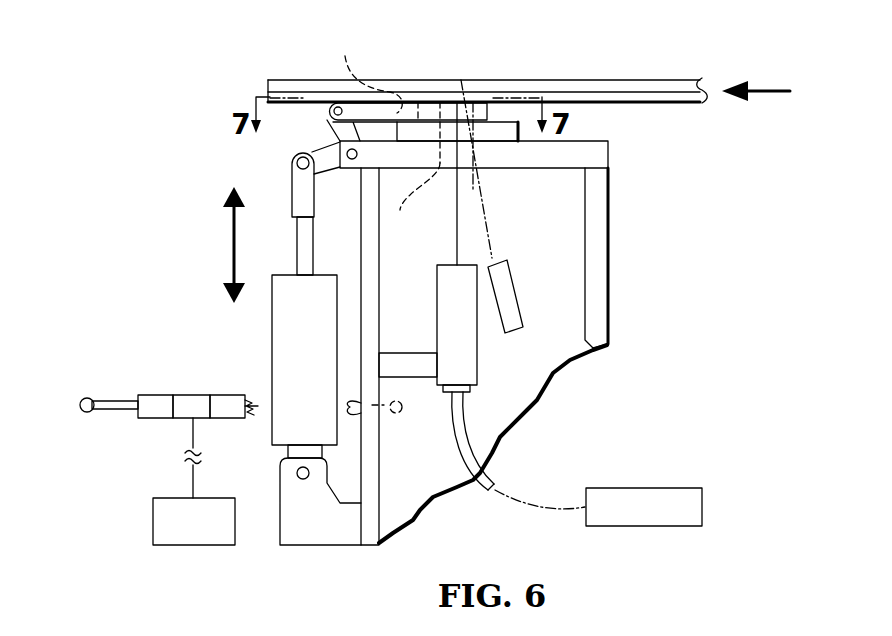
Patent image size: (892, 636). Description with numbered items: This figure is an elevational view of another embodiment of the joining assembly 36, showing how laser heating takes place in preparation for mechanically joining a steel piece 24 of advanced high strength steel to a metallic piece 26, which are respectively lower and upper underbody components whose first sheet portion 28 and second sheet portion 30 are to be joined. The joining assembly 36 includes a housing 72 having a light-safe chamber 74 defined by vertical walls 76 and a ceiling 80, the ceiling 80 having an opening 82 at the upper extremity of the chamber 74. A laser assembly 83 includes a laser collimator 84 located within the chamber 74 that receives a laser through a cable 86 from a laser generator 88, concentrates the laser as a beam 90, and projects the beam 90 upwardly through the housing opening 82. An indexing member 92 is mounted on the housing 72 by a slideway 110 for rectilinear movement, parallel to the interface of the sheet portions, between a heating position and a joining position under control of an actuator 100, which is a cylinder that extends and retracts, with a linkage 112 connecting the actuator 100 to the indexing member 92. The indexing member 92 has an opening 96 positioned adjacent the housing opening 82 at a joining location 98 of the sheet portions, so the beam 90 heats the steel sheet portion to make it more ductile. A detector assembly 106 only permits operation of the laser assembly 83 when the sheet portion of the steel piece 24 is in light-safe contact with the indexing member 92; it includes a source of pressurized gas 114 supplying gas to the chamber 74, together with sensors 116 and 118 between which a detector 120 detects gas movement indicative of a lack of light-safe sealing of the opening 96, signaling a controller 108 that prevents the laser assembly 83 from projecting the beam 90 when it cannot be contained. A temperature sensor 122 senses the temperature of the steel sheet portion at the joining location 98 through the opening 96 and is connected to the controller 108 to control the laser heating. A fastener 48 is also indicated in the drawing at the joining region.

The steel piece 24 is at (459, 96).
The metallic piece 26 is at (332, 80).
The first sheet portion 28 is at (628, 104).
The second sheet portion 30 is at (598, 81).
The joining assembly 36 is at (484, 305).
The fastener 48 is at (386, 98).
The housing 72 is at (505, 331).
The light-safe chamber 74 is at (588, 284).
The vertical walls 76 is at (607, 225).
The ceiling 80 is at (603, 155).
The opening 82 is at (413, 201).
The laser assembly 83 is at (433, 478).
The laser collimator 84 is at (477, 323).
The cable 86 is at (462, 433).
The laser generator 88 is at (631, 519).
The laser beam 90 is at (457, 231).
The indexing member 92 is at (431, 100).
The opening 96 is at (461, 80).
The joining location 98 is at (475, 100).
The actuator 100 is at (275, 352).
The detector assembly 106 is at (139, 421).
The controller 108 is at (176, 534).
The slideway 110 is at (500, 127).
The linkage 112 is at (258, 166).
The source of pressurized gas 114 is at (87, 414).
The sensor 116 is at (157, 400).
The sensor 118 is at (230, 400).
The detector 120 is at (193, 400).
The temperature sensor 122 is at (518, 296).